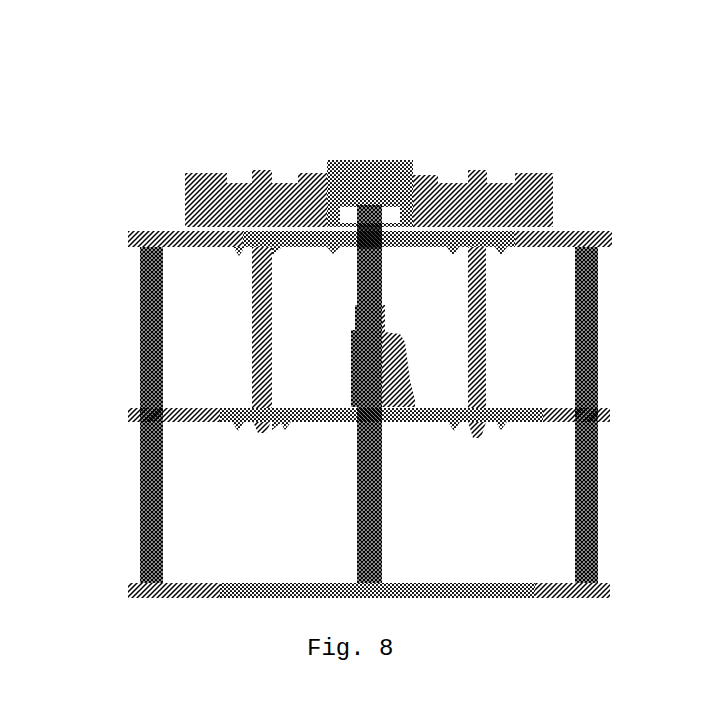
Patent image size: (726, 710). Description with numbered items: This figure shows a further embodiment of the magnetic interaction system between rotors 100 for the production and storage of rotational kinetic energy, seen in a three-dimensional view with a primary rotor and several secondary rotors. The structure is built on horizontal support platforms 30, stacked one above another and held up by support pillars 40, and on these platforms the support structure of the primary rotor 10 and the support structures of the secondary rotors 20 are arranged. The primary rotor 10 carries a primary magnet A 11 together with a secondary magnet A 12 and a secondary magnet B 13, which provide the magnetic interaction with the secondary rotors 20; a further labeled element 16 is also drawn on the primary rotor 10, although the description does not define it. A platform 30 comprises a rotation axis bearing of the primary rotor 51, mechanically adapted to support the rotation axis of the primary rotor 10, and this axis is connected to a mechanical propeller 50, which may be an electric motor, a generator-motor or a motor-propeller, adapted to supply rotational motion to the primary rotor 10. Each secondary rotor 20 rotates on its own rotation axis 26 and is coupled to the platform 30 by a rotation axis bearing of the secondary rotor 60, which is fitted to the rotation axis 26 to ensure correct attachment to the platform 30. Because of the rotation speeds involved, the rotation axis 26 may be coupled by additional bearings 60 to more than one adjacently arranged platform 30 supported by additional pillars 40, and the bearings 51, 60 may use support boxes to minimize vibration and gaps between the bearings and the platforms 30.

The magnetic interaction system between rotors 100 is at (126, 178).
The primary rotor 10 is at (430, 163).
The primary magnet A of the primary rotor 11 is at (373, 165).
The secondary magnet A of the primary rotor 12 is at (392, 165).
The secondary magnet B of the primary rotor 13 is at (355, 165).
The interconnect 16 is at (332, 165).
The secondary rotor 20 is at (230, 150).
The rotation axis of the secondary rotor 26 is at (263, 316).
The horizontal support platform 30 is at (543, 245).
The support pillar 40 is at (143, 363).
The mechanical propeller of the primary rotor 50 is at (355, 357).
The rotation axis bearing of the primary rotor 51 is at (387, 233).
The rotation axis bearing of the secondary rotor 60 is at (275, 235).